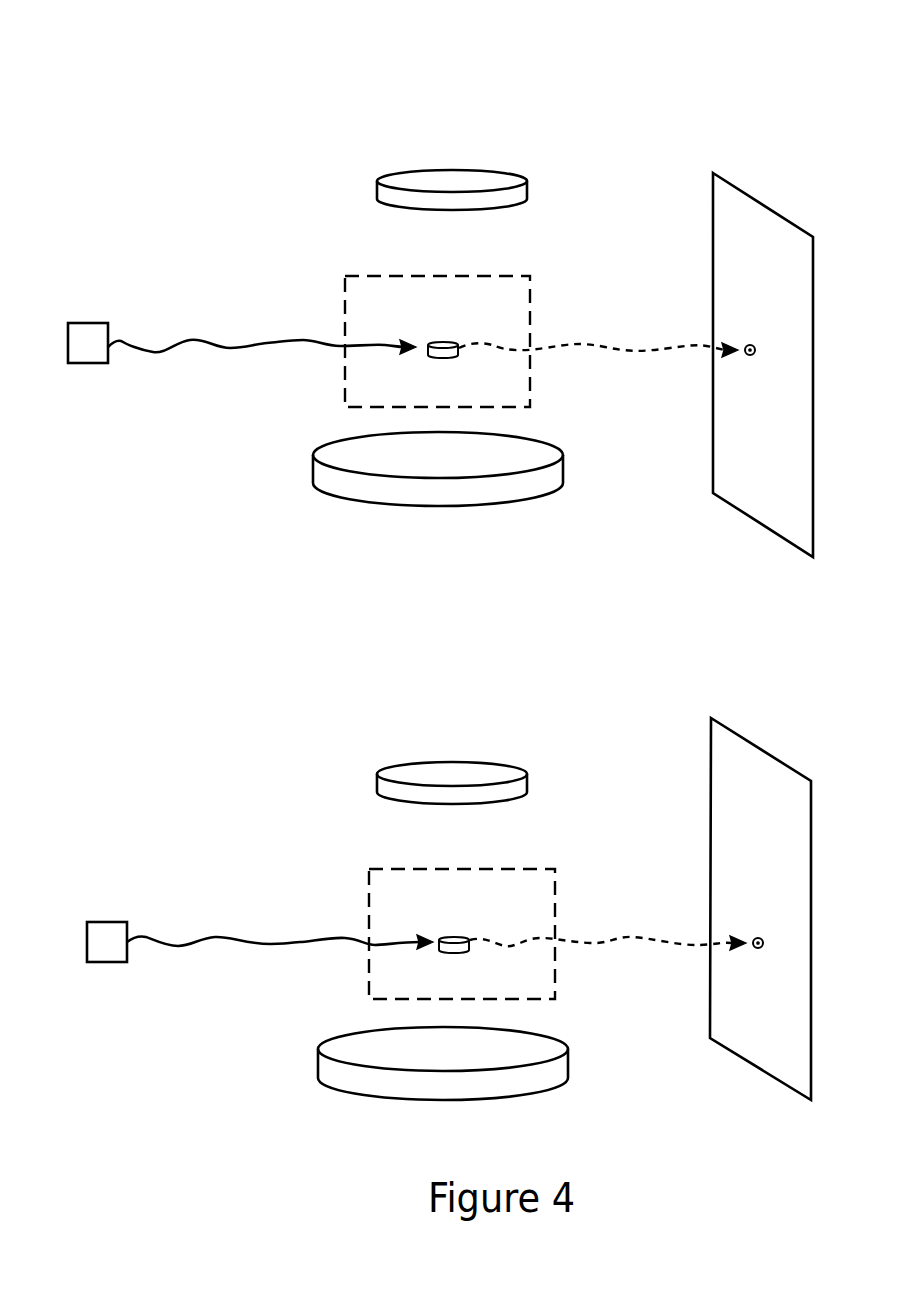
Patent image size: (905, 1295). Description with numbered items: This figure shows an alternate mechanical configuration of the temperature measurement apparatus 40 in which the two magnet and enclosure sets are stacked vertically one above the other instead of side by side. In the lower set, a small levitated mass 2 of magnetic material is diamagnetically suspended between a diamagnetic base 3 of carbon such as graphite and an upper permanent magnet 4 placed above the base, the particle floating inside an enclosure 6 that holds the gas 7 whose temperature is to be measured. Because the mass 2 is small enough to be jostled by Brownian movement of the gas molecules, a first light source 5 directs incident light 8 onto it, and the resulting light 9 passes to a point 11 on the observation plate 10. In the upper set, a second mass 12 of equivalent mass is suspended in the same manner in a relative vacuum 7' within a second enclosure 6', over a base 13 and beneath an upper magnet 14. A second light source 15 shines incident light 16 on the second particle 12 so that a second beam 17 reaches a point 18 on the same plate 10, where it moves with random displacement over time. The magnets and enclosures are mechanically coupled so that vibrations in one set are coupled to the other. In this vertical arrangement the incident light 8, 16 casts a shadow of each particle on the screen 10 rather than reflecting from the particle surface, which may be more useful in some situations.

The laser scanning apparatus 40 is at (112, 63).
The upper magnet 14 is at (378, 192).
The second light source 15 is at (68, 341).
The incident light 16 is at (213, 342).
The enclosure 6' is at (437, 341).
The second mass 12 is at (430, 356).
The second reflected beam 17 is at (603, 346).
The point 18 is at (748, 340).
The observation plate 10 is at (760, 203).
The relative vacuum 7' is at (548, 403).
The base 13 is at (563, 465).
The upper permanent magnet 4 is at (526, 783).
The first light source 5 is at (87, 940).
The incident light 8 is at (225, 937).
The enclosure 6 is at (462, 934).
The levitated mass 2 is at (472, 946).
The reflected light 9 is at (635, 937).
The point 11 is at (758, 950).
The gas 7 is at (571, 998).
The base 3 is at (568, 1060).